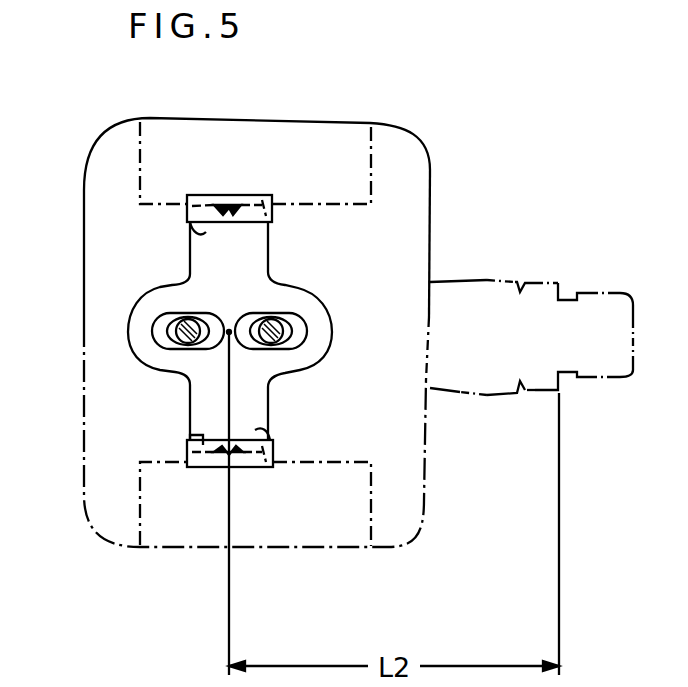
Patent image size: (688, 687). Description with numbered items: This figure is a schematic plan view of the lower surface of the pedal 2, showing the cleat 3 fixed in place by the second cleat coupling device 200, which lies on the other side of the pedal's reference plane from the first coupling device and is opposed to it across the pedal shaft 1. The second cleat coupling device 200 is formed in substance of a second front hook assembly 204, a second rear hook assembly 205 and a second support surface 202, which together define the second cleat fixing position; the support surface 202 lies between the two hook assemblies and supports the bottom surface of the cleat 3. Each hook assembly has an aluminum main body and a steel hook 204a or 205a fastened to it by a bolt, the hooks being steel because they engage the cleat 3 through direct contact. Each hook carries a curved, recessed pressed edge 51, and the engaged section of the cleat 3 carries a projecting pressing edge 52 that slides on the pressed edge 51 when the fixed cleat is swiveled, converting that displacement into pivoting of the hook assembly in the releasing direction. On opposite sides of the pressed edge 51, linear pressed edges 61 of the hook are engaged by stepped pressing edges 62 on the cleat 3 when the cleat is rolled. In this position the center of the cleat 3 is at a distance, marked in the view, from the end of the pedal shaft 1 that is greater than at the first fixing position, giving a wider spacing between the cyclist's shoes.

The pedal shaft 1 is at (600, 290).
The pedal 2 is at (418, 146).
The cleat 3 is at (133, 333).
The pressed edge 51 is at (231, 218).
The pressing edge 52 is at (227, 205).
The pressed edges 61 is at (195, 232).
The pressing edges 62 is at (270, 196).
The second cleat coupling device 200 is at (112, 290).
The second support surface 202 is at (401, 213).
The second front hook assembly 204 is at (297, 116).
The hook 204a is at (275, 222).
The second rear hook assembly 205 is at (338, 549).
The hook 205a is at (281, 450).